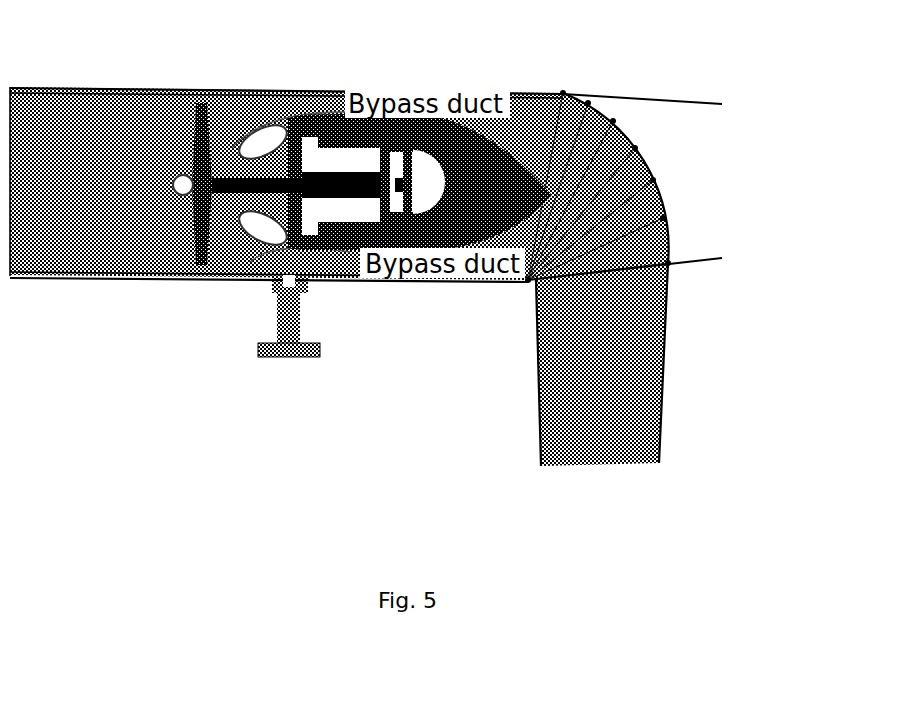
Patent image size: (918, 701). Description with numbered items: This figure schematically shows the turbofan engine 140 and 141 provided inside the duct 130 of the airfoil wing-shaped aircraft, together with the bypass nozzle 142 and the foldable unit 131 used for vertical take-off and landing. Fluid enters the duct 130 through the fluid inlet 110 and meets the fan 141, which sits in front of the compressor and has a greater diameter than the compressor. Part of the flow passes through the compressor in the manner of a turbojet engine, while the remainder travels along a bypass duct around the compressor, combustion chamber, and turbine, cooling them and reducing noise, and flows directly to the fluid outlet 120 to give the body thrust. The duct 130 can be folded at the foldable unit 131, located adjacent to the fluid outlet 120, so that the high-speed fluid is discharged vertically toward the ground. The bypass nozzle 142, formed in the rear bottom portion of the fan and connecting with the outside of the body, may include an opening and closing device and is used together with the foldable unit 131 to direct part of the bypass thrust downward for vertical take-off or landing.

The fluid inlet 110 is at (6, 190).
The fluid outlet 120 is at (618, 462).
The duct 130 is at (150, 140).
The foldable unit 131 is at (653, 180).
The turbofan engine 140 is at (283, 243).
The fan 141 is at (195, 245).
The bypass nozzle 142 is at (298, 303).